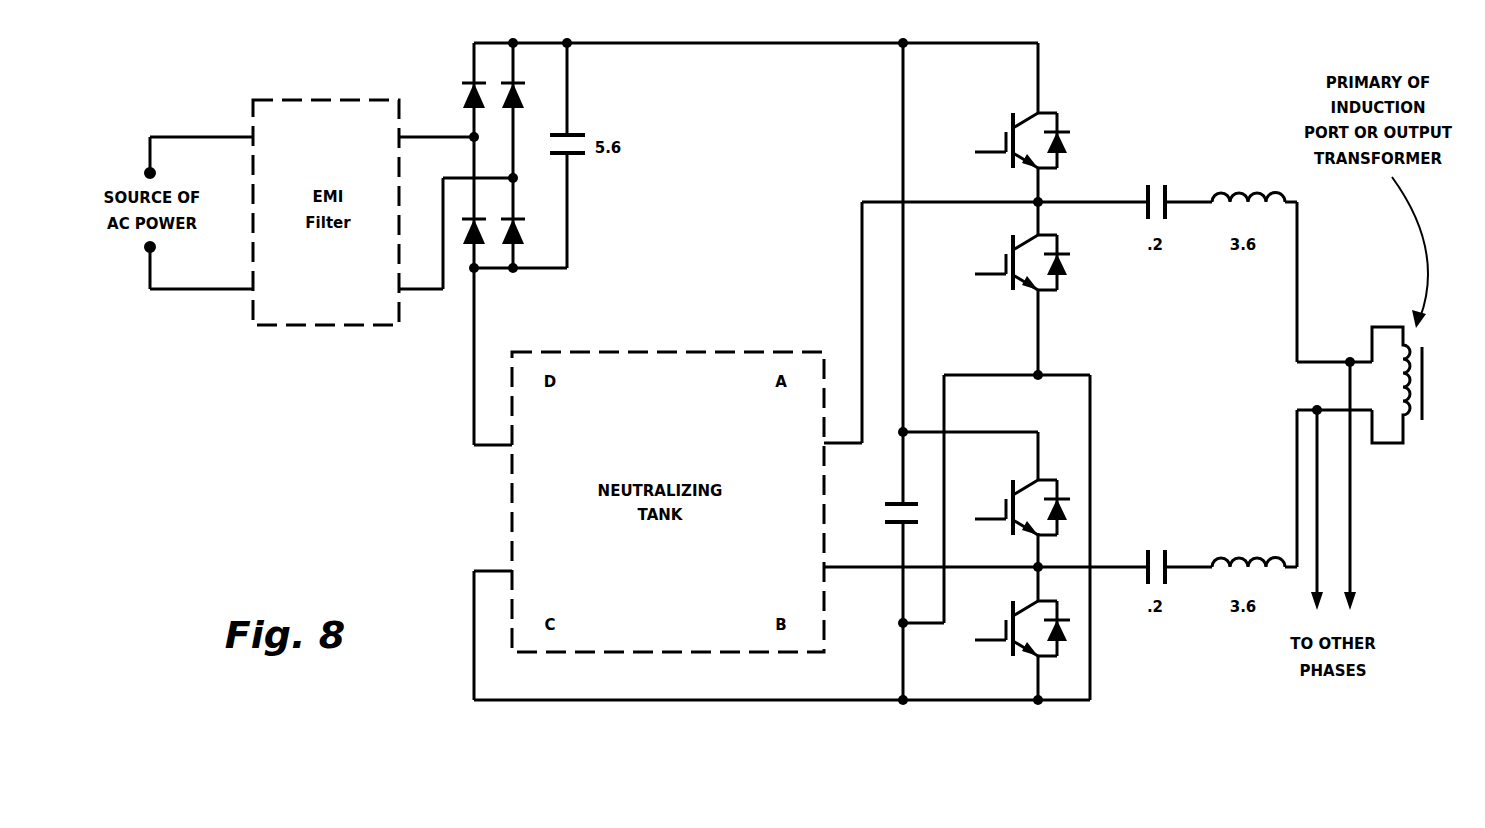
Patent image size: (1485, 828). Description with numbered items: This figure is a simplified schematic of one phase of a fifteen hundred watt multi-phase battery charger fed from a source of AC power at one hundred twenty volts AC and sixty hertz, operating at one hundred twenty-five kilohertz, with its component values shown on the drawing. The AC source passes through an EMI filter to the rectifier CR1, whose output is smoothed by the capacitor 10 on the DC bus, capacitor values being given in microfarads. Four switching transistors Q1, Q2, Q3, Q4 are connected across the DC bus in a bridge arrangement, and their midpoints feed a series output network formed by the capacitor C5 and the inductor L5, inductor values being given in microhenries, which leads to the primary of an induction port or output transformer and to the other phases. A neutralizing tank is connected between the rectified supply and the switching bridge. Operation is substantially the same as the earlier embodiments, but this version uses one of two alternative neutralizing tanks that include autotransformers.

The rectifier bridge diodes CR1 is at (470, 155).
The DC bus filter capacitor 10 is at (885, 513).
The IGBT switch Q1 is at (1018, 137).
The IGBT switch Q2 is at (1018, 262).
The IGBT switch Q3 is at (1018, 507).
The IGBT switch Q4 is at (1018, 628).
The output series capacitor C5 is at (1157, 371).
The output series inductor L5 is at (1248, 362).